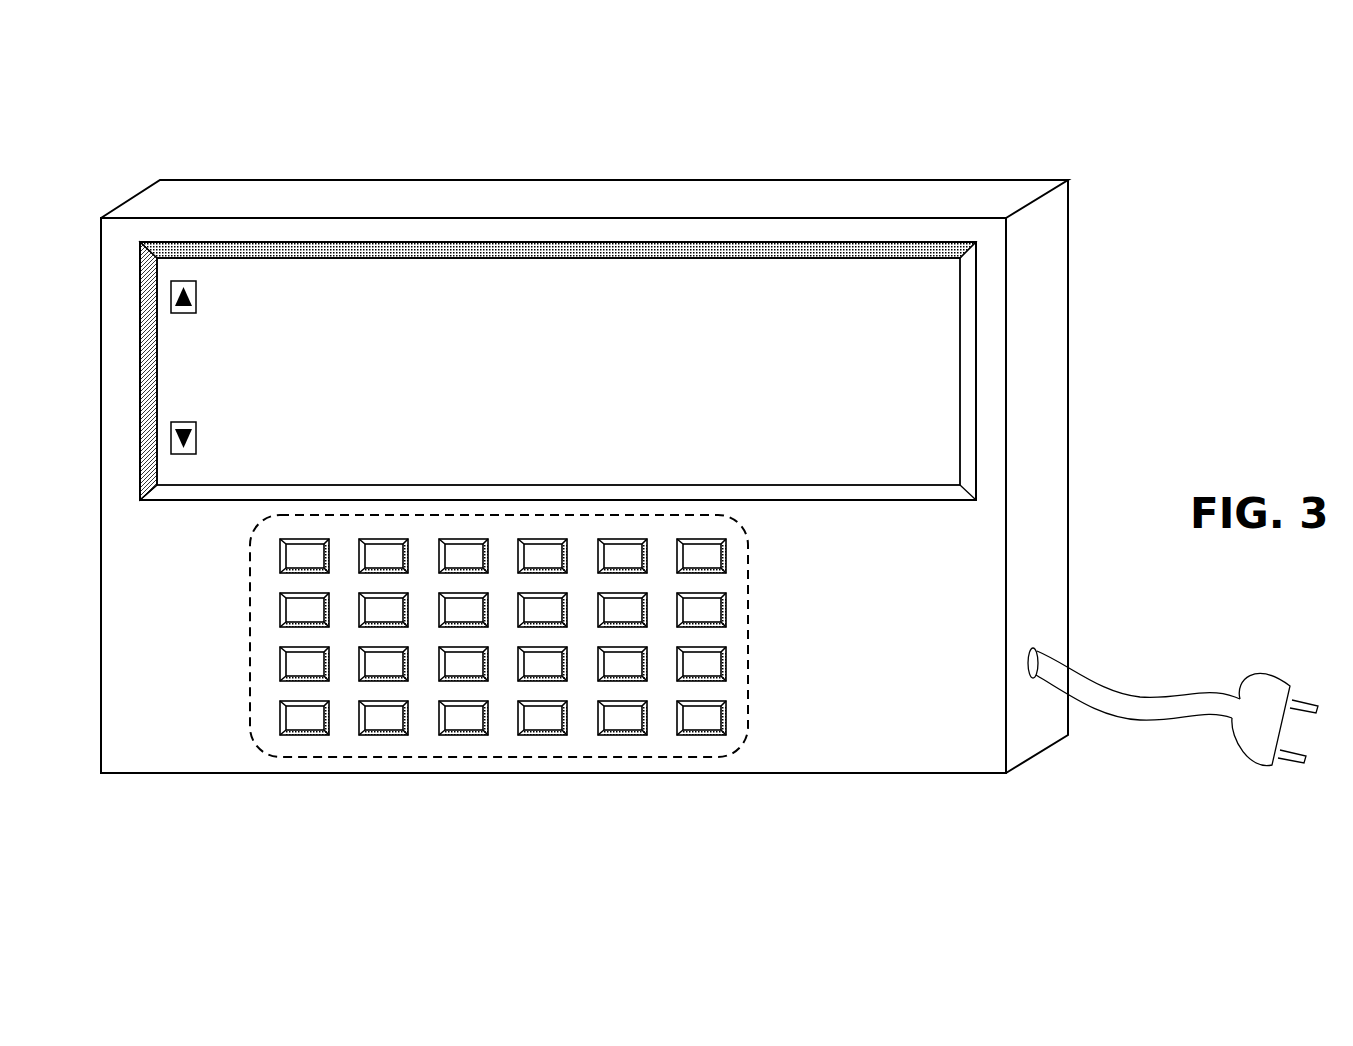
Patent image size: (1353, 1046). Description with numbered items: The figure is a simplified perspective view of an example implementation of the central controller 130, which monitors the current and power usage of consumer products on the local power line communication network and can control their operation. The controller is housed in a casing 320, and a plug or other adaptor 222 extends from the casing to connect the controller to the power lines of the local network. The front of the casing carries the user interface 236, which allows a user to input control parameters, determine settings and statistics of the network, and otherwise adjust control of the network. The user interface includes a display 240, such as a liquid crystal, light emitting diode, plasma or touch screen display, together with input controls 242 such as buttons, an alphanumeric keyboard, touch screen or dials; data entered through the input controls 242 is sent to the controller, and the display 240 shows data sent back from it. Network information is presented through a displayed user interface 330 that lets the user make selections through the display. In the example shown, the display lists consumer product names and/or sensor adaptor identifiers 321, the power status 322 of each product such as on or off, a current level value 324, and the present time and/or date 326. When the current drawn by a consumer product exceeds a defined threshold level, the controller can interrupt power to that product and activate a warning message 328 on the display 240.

The central controller 130 is at (709, 473).
The casing 320 is at (1053, 216).
The user interface 236 is at (152, 757).
The displayed user interface 330 is at (650, 305).
The consumer product names and/or sensor adaptor identifiers 321 is at (270, 296).
The power status 322 is at (572, 315).
The current level value 324 is at (688, 366).
The present time and/or date 326 is at (950, 277).
The display 240 is at (690, 292).
The warning message 328 is at (843, 404).
The input controls 242 is at (630, 720).
The plug or other adaptor 222 is at (1275, 688).